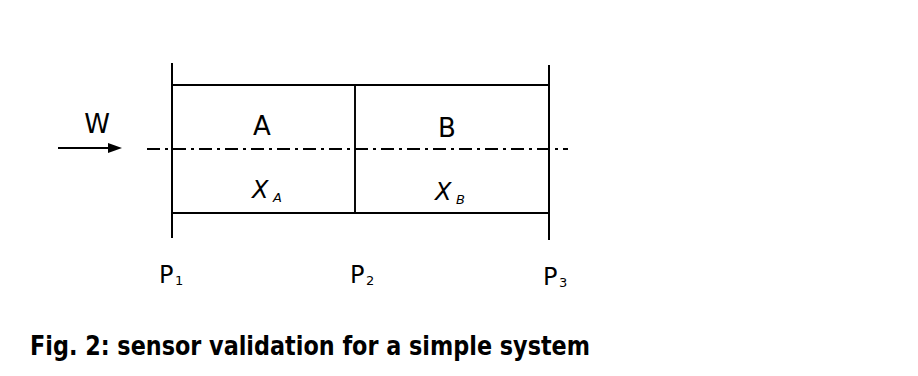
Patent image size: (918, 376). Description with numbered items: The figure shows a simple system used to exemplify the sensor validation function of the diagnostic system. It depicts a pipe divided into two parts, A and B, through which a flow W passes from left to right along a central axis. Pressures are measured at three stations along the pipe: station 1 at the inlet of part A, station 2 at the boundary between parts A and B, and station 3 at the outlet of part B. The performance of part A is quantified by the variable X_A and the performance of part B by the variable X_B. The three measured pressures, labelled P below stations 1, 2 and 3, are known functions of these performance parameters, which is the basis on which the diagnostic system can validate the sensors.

The station 1 is at (165, 148).
The station 2 is at (359, 136).
The station 3 is at (546, 149).